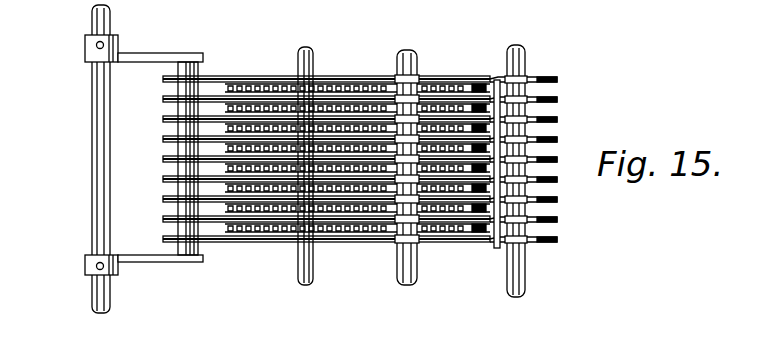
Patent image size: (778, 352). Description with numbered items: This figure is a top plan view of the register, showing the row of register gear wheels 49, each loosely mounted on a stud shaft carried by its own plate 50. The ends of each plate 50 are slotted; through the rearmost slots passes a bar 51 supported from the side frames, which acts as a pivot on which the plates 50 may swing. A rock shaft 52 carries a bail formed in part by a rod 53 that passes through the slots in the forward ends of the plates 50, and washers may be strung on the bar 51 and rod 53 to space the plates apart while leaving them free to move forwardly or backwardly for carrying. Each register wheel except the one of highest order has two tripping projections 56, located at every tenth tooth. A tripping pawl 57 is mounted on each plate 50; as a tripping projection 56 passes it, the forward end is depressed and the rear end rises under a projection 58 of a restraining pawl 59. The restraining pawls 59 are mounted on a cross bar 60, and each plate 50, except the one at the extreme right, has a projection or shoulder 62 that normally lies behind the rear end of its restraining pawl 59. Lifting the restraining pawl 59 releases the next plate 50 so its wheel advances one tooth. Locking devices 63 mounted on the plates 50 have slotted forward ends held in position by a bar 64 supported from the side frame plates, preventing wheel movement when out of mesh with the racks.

The register gear wheel 49 is at (245, 110).
The plate 50 is at (163, 137).
The bar 51 is at (524, 63).
The rock shaft 52 is at (93, 143).
The rod 53 is at (178, 248).
The tripping projection 56 is at (272, 203).
The tripping pawl 57 is at (372, 210).
The projection 58 is at (478, 96).
The restraining pawl 59 is at (438, 203).
The cross bar 60 is at (404, 57).
The projection or shoulder 62 is at (497, 83).
The locking device 63 is at (493, 223).
The bar 64 is at (320, 56).